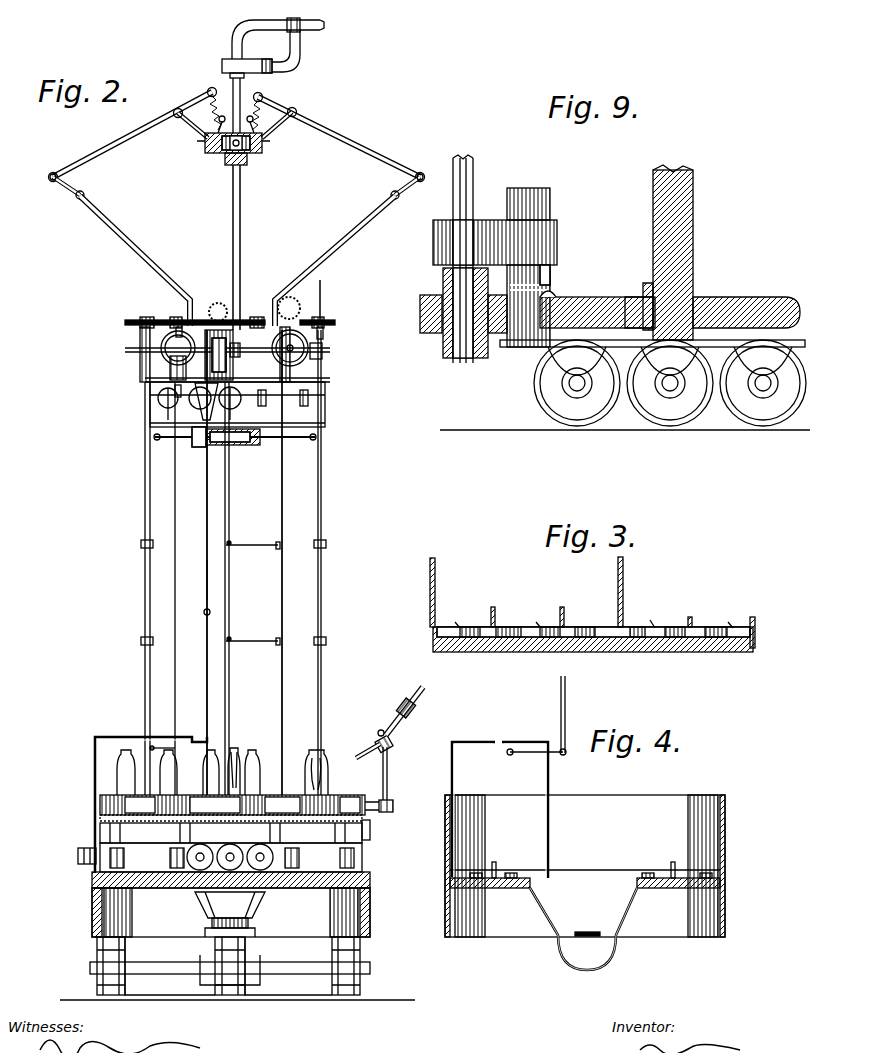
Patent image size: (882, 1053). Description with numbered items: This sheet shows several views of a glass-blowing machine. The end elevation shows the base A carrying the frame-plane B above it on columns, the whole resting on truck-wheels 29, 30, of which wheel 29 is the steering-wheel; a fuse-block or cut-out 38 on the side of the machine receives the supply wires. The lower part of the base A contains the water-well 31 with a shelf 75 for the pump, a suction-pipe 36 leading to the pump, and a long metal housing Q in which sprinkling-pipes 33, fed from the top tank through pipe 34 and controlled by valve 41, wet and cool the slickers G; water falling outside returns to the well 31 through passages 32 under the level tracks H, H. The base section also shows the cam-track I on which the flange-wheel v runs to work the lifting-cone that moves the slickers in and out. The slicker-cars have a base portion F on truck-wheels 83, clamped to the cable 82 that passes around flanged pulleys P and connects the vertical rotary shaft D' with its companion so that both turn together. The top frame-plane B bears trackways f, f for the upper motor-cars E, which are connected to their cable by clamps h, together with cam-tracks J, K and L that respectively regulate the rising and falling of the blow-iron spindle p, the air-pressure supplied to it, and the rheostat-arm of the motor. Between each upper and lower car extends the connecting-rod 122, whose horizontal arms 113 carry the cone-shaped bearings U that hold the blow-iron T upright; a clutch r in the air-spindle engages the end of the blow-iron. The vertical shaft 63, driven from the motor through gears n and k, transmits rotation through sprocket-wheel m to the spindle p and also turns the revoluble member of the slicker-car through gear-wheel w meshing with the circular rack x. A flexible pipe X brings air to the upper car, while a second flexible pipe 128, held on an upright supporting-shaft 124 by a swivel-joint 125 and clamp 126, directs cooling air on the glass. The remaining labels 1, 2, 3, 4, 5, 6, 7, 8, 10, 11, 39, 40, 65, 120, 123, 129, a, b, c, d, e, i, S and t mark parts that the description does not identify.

In FIG. 2, the hub block 1 is at (250, 153).
In FIG. 2, the nozzle body 2 is at (247, 58).
In FIG. 2, the pipe coupling 3 is at (276, 38).
In FIG. 2, the pipe end 4 is at (330, 25).
In FIG. 2, the main shaft 5 is at (241, 240).
In FIG. 2, the hub stem 6 is at (226, 157).
In FIG. 2, the upper shaft 7 is at (241, 84).
In FIG. 2, the central tube 8 is at (238, 752).
In FIG. 2, the guide tube 10 is at (312, 760).
In FIG. 2, the bottle holder 11 is at (152, 772).
In FIG. 2, the steering truck-wheel 29 is at (235, 970).
In FIG. 2, the truck-wheels 30 is at (226, 970).
In FIG. 4, the well 31 is at (556, 950).
In FIG. 4, the holes or passages 32 is at (665, 900).
In FIG. 2, the sprinkling-pipes 33 is at (159, 733).
In FIG. 4, the sprinkling-pipes 33 is at (528, 763).
In FIG. 4, the pipe 34 is at (550, 715).
In FIG. 2, the suction-pipe 36 is at (195, 580).
In FIG. 2, the fuse-block or cut-out 38 is at (80, 865).
In FIG. 2, the gear segment 39 is at (292, 304).
In FIG. 2, the gear segment 40 is at (232, 303).
In FIG. 2, the valve 41 is at (194, 562).
In FIG. 2, the vertical rotary shaft 63 is at (260, 537).
In FIG. 9, the shaft 65 is at (474, 252).
In FIG. 4, the shelf 75 is at (588, 925).
In FIG. 9, the cable 82 is at (562, 292).
In FIG. 2, the truck-wheels 83 is at (285, 880).
In FIG. 9, the truck-wheels 83 is at (670, 383).
In FIG. 2, the horizontal arms 113 is at (253, 593).
In FIG. 2, the elbow pipe 120 is at (303, 66).
In FIG. 2, the vertical connecting-rod 122 is at (297, 562).
In FIG. 2, the block 123 is at (395, 807).
In FIG. 2, the upright supporting-shaft 124 is at (401, 773).
In FIG. 2, the swivel-joint 125 is at (392, 748).
In FIG. 2, the clamp 126 is at (386, 735).
In FIG. 2, the flexible pipe 128 is at (359, 742).
In FIG. 2, the handle 129 is at (416, 711).
In FIG. 2, the upper arms a is at (237, 135).
In FIG. 2, the pivots b is at (234, 189).
In FIG. 2, the link c is at (191, 124).
In FIG. 2, the springs d is at (234, 114).
In FIG. 2, the links e is at (236, 154).
In FIG. 2, the flexible air-pipe X is at (335, 172).
In FIG. 2, the bar i is at (124, 322).
In FIG. 2, the sprocket-wheel m is at (252, 321).
In FIG. 2, the gear k is at (226, 350).
In FIG. 2, the cam-track K is at (145, 355).
In FIG. 3, the cam-track K is at (593, 607).
In FIG. 2, the gear n is at (234, 355).
In FIG. 2, the upper motor-cars E is at (312, 380).
In FIG. 2, the top frame-plane B is at (300, 418).
In FIG. 3, the top frame-plane B is at (735, 655).
In FIG. 2, the flanged pulleys P is at (255, 395).
In FIG. 9, the flanged pulleys P is at (712, 302).
In FIG. 2, the blow-iron spindle p is at (246, 414).
In FIG. 2, the flange-wheel v is at (196, 418).
In FIG. 2, the clutch r is at (258, 452).
In FIG. 2, the clamps h is at (158, 443).
In FIG. 2, the blow-iron bearings U is at (226, 589).
In FIG. 2, the blow-iron T is at (232, 693).
In FIG. 2, the housing Q is at (110, 737).
In FIG. 4, the housing Q is at (509, 810).
In FIG. 2, the slickers G is at (190, 769).
In FIG. 2, the deck S is at (100, 800).
In FIG. 2, the band t is at (231, 833).
In FIG. 2, the circular rack x is at (374, 827).
In FIG. 9, the circular rack x is at (506, 220).
In FIG. 2, the slicker-car base portion F is at (362, 840).
In FIG. 9, the slicker-car base portion F is at (612, 321).
In FIG. 2, the base A is at (372, 890).
In FIG. 4, the base A is at (727, 915).
In FIG. 9, the gear-wheel w is at (487, 232).
In FIG. 9, the vertical rotary shaft D' is at (677, 252).
In FIG. 3, the cam-track J is at (591, 592).
In FIG. 3, the cam-track L is at (596, 588).
In FIG. 3, the trackways f is at (592, 616).
In FIG. 4, the level tracks H is at (740, 866).
In FIG. 4, the cam-track I is at (584, 861).